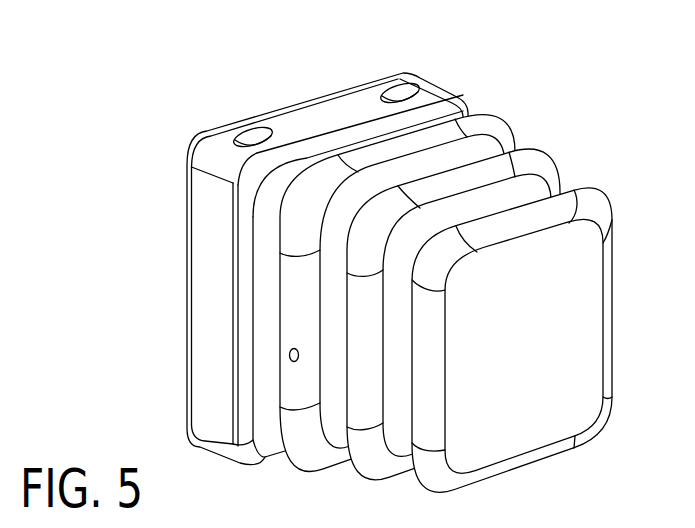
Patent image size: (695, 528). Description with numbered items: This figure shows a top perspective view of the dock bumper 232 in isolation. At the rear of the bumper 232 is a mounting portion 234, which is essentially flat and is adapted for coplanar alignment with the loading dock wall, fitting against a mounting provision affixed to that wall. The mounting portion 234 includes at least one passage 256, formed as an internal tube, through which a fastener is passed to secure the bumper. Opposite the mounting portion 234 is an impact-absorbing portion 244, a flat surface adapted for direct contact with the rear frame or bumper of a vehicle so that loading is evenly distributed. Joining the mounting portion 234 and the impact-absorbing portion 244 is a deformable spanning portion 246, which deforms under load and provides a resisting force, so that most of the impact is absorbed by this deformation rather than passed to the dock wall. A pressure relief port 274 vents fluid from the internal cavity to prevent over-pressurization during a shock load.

The bumper 232 is at (169, 145).
The mounting portion 234 is at (207, 364).
The impact-absorbing portion 244 is at (566, 316).
The spanning portion 246 is at (532, 193).
The passage 256 is at (403, 112).
The pressure relief port 274 is at (289, 356).